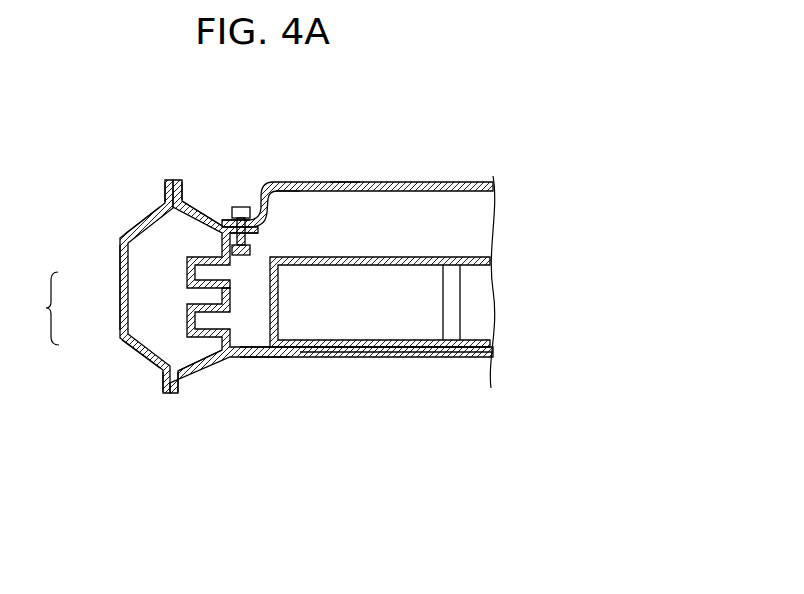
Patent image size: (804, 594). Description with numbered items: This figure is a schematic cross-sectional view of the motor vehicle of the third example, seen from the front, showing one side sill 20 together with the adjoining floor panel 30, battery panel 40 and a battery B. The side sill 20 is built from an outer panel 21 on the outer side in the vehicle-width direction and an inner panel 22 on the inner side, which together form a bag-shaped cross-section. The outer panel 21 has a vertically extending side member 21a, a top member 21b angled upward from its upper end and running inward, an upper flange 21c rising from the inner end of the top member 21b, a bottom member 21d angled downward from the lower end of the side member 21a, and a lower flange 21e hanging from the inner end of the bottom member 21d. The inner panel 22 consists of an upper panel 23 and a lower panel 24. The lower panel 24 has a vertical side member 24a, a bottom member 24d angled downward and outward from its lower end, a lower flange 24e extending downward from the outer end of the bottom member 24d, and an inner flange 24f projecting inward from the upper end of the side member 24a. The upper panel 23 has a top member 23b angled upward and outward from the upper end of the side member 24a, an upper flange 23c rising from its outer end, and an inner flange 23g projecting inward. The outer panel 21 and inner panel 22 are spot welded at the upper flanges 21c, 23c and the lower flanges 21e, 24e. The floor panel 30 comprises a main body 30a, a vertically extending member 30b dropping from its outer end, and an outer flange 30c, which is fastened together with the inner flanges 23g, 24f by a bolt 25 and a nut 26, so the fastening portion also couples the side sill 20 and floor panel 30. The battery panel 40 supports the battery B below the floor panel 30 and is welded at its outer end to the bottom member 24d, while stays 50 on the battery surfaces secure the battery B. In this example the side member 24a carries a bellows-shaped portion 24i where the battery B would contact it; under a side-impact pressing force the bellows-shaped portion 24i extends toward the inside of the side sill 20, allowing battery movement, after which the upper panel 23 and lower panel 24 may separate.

The side sill 20 is at (117, 358).
The outer panel 21 is at (121, 236).
The side member 21a is at (118, 262).
The top member 21b is at (140, 210).
The upper flange 21c is at (158, 178).
The bottom member 21d is at (152, 362).
The lower flange 21e is at (165, 395).
The inner panel 22 is at (37, 308).
The upper panel 23 is at (187, 264).
The top member 23b is at (203, 208).
The upper flange 23c is at (186, 180).
The inner flange 23g is at (260, 231).
The lower panel 24 is at (187, 290).
The side member 24a is at (270, 360).
The bottom member 24d is at (200, 378).
The lower flange 24e is at (183, 394).
The inner flange 24f is at (252, 250).
The bellows-shaped portion 24i is at (295, 358).
The bolt 25 is at (241, 206).
The nut 26 is at (280, 302).
The floor panel 30 is at (400, 181).
The main body 30a is at (360, 165).
The vertically extending member 30b is at (291, 189).
The outer flange 30c is at (224, 218).
The battery panel 40 is at (413, 358).
The stay 50 is at (431, 263).
The battery B is at (469, 276).